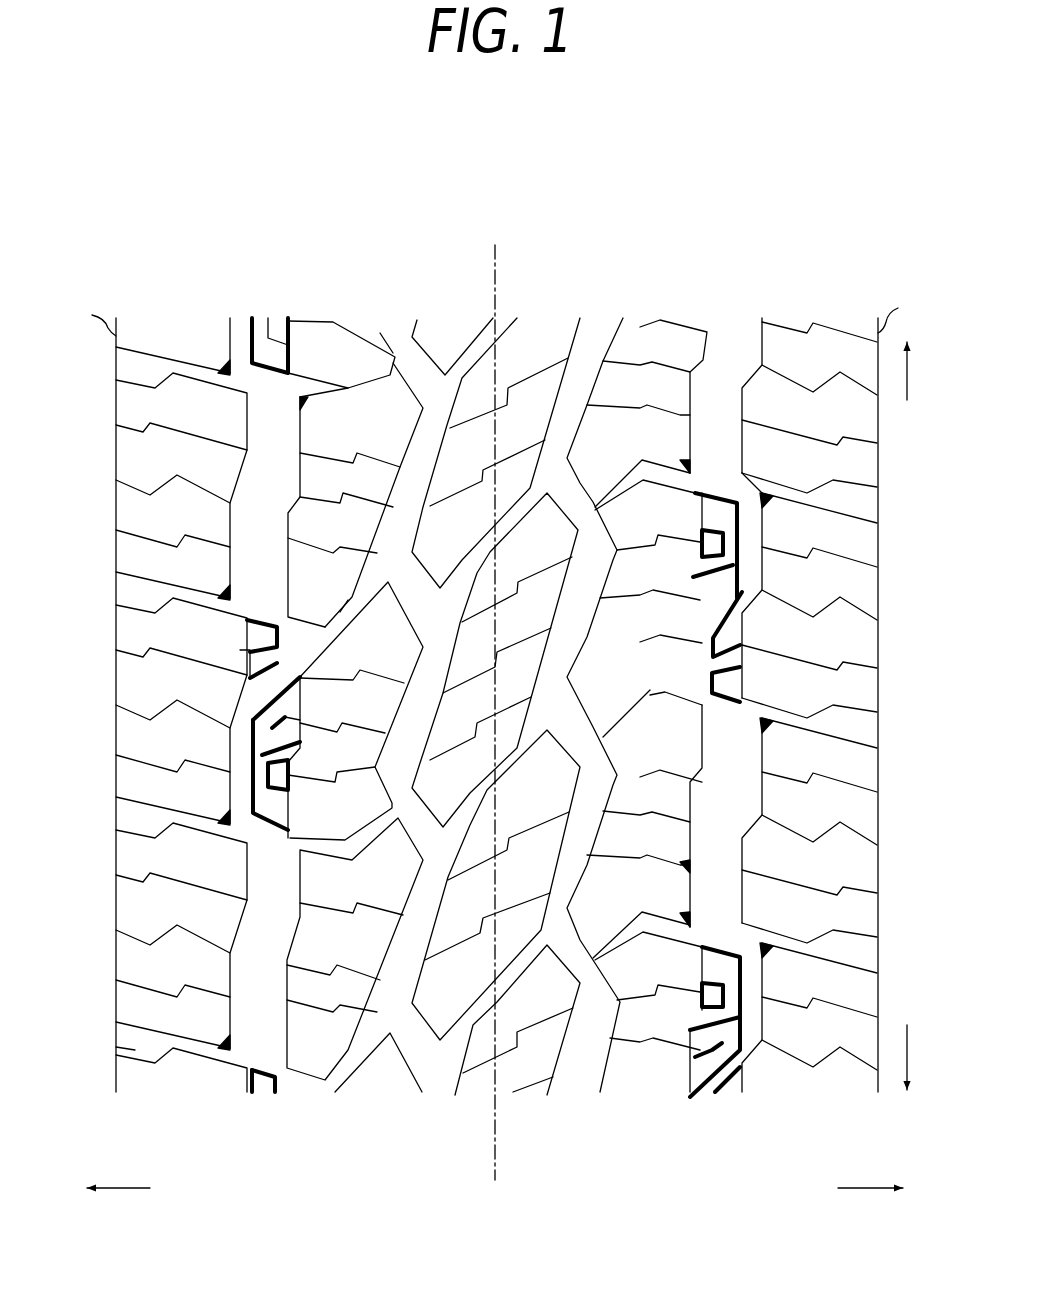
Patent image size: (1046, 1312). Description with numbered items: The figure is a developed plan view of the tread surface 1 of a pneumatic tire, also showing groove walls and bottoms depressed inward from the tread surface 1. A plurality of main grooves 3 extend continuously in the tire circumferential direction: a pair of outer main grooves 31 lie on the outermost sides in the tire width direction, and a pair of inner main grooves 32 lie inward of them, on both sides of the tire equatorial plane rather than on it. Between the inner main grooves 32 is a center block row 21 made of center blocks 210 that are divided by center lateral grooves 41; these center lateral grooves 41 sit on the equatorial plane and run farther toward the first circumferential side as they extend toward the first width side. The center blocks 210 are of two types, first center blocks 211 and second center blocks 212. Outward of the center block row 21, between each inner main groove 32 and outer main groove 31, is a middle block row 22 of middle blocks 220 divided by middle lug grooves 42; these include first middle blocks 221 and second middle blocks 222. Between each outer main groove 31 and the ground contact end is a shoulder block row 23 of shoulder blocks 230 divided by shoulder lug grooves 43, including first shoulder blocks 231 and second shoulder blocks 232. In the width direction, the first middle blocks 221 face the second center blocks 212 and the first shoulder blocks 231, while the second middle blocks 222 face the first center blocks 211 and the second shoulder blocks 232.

The tread surface 1 is at (546, 158).
The main groove 3 is at (506, 643).
The center block row 21 is at (683, 669).
The middle block row 22 is at (320, 293).
The shoulder block row 23 is at (157, 284).
The outer main groove 31 is at (237, 309).
The inner main groove 32 is at (391, 306).
The center lateral groove 41 is at (580, 528).
The middle lug groove 42 is at (340, 615).
The shoulder lug groove 43 is at (135, 1047).
The center block 210 is at (690, 725).
The first center block 211 is at (522, 858).
The second center block 212 is at (520, 667).
The middle block 220 is at (502, 632).
The first middle block 221 is at (320, 754).
The second middle block 222 is at (322, 483).
The shoulder block 230 is at (499, 765).
The first shoulder block 231 is at (152, 681).
The second shoulder block 232 is at (142, 961).